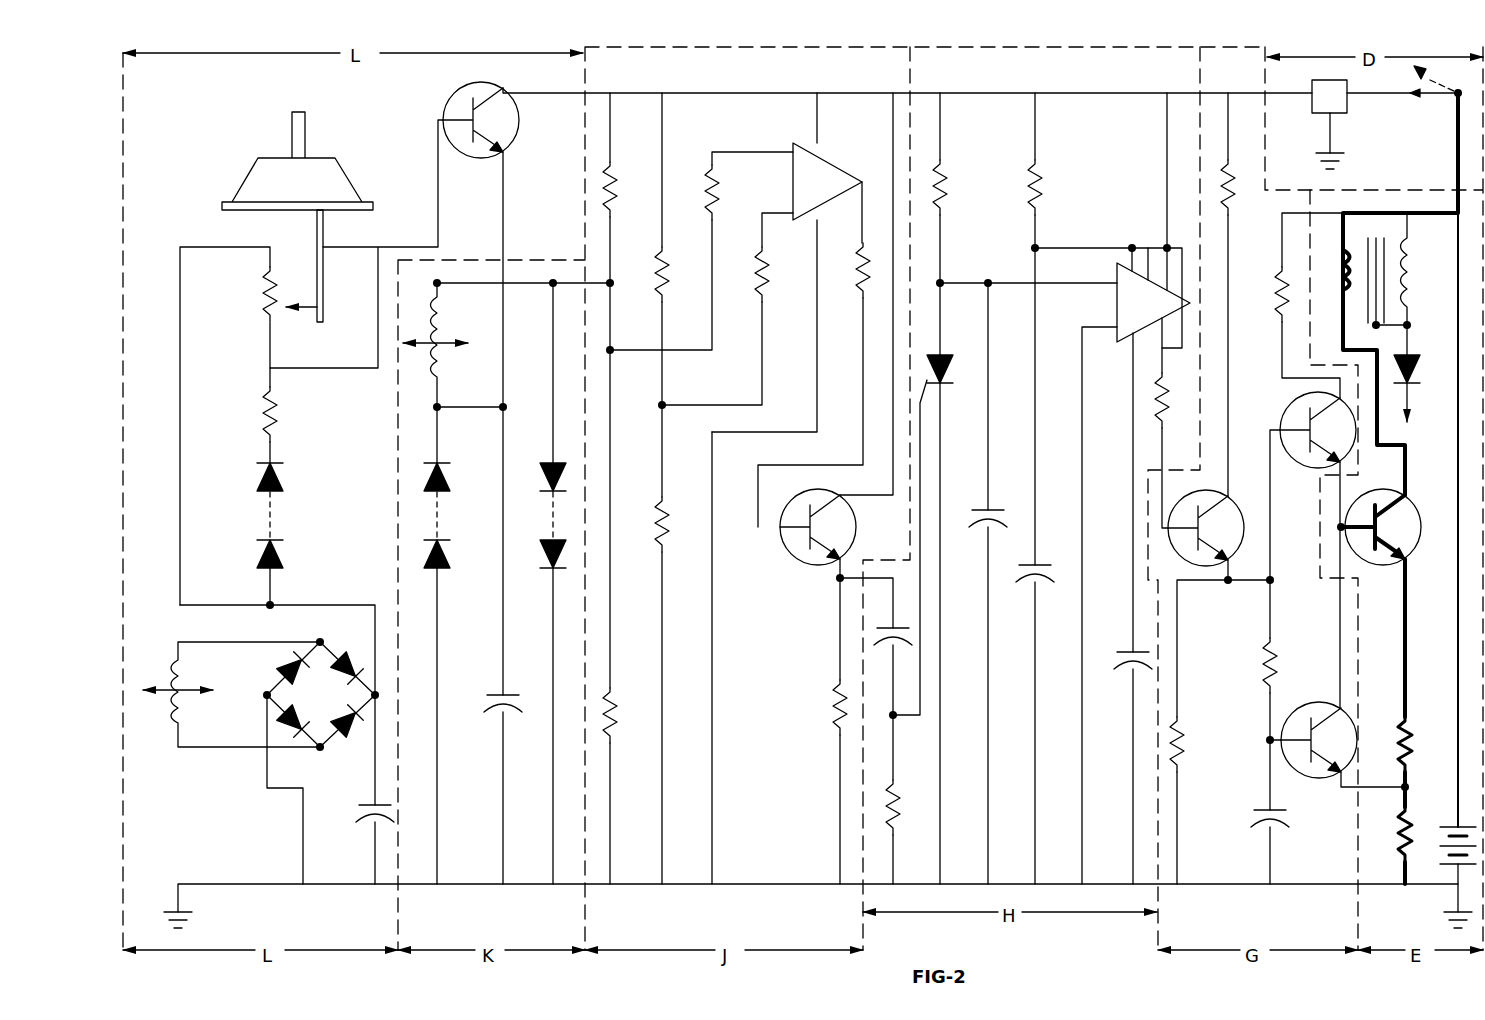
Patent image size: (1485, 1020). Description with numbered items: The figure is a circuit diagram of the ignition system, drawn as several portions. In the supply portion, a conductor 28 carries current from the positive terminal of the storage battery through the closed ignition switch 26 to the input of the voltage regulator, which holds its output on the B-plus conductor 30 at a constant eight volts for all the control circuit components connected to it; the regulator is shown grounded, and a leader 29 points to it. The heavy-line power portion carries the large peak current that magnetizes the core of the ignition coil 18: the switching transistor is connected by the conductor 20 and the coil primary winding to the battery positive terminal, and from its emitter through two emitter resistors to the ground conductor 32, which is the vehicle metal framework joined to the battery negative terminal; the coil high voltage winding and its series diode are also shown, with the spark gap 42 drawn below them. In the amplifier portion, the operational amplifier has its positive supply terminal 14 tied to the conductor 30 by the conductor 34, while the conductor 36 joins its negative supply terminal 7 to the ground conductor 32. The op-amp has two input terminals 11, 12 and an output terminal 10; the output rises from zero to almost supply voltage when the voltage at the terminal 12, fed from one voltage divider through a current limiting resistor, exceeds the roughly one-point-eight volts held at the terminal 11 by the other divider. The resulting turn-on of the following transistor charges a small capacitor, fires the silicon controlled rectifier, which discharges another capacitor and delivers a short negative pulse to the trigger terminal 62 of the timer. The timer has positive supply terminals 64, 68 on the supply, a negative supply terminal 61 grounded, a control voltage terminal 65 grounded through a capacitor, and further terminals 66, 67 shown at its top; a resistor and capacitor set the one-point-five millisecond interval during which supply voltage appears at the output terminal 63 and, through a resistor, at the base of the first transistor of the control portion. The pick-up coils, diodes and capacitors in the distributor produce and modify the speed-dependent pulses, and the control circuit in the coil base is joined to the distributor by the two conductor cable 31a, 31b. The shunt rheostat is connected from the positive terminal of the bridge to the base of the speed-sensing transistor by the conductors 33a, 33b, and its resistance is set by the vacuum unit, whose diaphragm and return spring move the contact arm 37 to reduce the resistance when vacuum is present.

The B+ conductor 30 is at (636, 93).
The two conductor cable 31a is at (586, 262).
The two conductor cable 31b is at (557, 95).
The ground conductor 32 is at (750, 884).
The two conductor cable 33a is at (225, 415).
The two conductor cable 33b is at (356, 244).
The conductor 34 is at (822, 130).
The conductor 36 is at (710, 692).
The contact arm 37 is at (318, 266).
The negative supply terminal 7 is at (772, 326).
The output terminal 10 is at (877, 183).
The input terminal 11 is at (779, 213).
The input terminal 12 is at (777, 143).
The positive supply terminal 14 is at (830, 124).
The negative supply terminal 61 is at (1099, 597).
The trigger terminal 62 is at (1028, 273).
The output terminal 63 is at (1190, 303).
The positive supply terminal 64 is at (1163, 283).
The control voltage terminal 65 is at (1150, 345).
The timer terminal 66 is at (1132, 265).
The timer terminal 67 is at (1148, 270).
The positive supply terminal 68 is at (1190, 300).
The ignition coil 18 is at (1373, 233).
The conductor 20 is at (1457, 625).
The ignition switch 26 is at (1455, 100).
The conductor 28 is at (1458, 140).
The voltage regulator VR 29 is at (1357, 96).
The spark plug gap 42 is at (1412, 392).